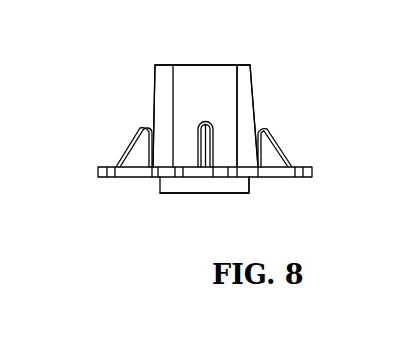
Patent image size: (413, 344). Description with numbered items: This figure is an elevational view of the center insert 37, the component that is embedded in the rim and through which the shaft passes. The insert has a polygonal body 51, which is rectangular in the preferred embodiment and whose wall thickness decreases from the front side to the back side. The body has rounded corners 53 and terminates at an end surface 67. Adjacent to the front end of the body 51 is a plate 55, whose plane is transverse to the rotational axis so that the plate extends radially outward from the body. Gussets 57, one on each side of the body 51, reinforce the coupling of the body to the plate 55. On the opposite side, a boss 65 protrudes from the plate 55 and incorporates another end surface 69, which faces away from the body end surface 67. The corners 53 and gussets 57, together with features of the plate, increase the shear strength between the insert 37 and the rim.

The center insert 37 is at (253, 83).
The polygonal body 51 is at (175, 70).
The end surface 67 is at (250, 64).
The rounded corners 53 is at (155, 93).
The gussets 57 is at (140, 155).
The plate 55 is at (279, 173).
The boss 65 is at (160, 187).
The end surface 69 is at (245, 193).